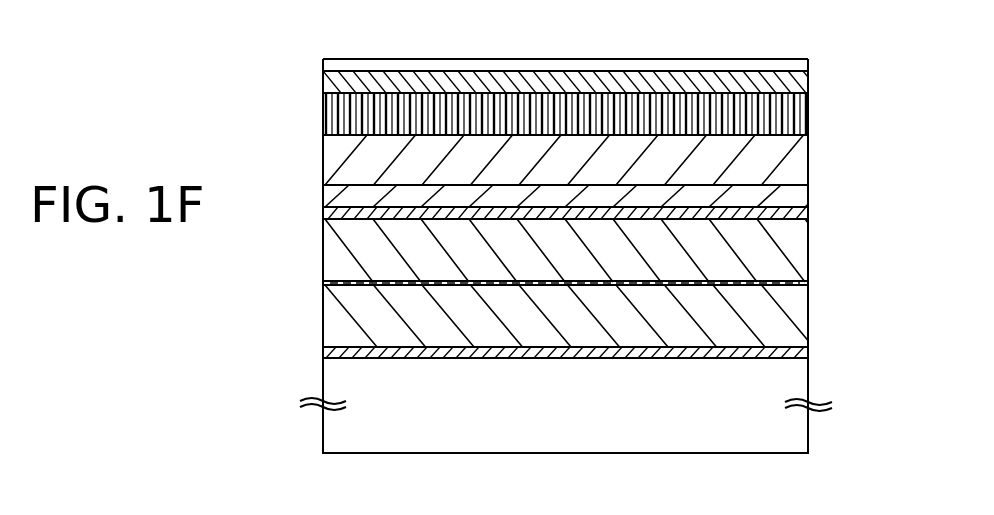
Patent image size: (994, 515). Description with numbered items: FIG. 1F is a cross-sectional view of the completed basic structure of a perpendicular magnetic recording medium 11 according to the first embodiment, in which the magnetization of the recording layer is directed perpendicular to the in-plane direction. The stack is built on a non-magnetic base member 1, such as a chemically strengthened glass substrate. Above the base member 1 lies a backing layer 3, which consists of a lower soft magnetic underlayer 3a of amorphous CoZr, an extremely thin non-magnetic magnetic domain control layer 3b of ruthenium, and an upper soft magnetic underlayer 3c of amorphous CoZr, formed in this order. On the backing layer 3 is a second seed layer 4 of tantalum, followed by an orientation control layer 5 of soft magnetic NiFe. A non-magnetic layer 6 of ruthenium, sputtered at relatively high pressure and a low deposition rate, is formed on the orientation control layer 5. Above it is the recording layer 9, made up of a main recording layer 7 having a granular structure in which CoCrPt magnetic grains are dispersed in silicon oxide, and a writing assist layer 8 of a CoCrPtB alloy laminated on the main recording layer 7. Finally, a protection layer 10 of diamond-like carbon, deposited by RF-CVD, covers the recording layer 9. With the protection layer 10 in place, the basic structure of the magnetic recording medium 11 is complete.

The non-magnetic base member 1 is at (468, 436).
The backing layer 3 is at (882, 225).
The lower soft magnetic underlayer 3a is at (792, 320).
The magnetic domain control layer 3b is at (795, 285).
The upper soft magnetic underlayer 3c is at (792, 253).
The second seed layer 4 is at (322, 212).
The orientation control layer 5 is at (322, 195).
The non-magnetic layer 6 is at (810, 163).
The main recording layer 7 is at (807, 112).
The writing assist layer 8 is at (807, 83).
The recording layer 9 is at (877, 50).
The protection layer 10 is at (700, 63).
The magnetic recording medium 11 is at (268, 55).